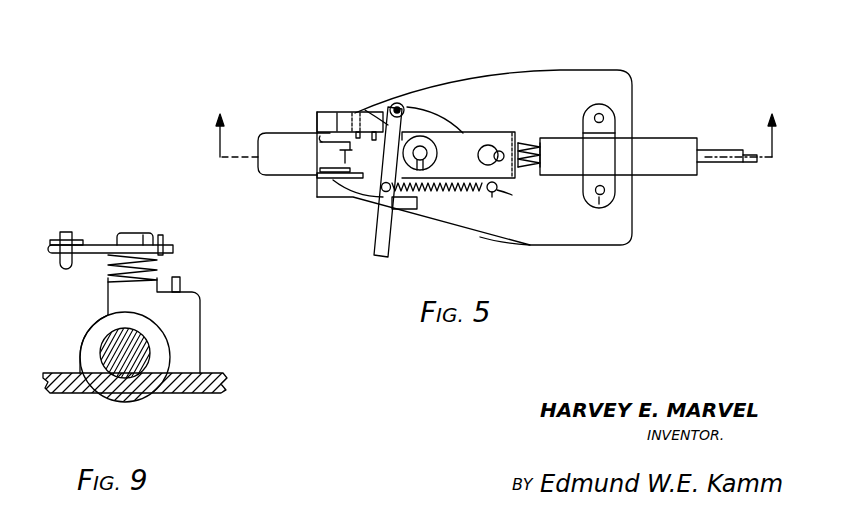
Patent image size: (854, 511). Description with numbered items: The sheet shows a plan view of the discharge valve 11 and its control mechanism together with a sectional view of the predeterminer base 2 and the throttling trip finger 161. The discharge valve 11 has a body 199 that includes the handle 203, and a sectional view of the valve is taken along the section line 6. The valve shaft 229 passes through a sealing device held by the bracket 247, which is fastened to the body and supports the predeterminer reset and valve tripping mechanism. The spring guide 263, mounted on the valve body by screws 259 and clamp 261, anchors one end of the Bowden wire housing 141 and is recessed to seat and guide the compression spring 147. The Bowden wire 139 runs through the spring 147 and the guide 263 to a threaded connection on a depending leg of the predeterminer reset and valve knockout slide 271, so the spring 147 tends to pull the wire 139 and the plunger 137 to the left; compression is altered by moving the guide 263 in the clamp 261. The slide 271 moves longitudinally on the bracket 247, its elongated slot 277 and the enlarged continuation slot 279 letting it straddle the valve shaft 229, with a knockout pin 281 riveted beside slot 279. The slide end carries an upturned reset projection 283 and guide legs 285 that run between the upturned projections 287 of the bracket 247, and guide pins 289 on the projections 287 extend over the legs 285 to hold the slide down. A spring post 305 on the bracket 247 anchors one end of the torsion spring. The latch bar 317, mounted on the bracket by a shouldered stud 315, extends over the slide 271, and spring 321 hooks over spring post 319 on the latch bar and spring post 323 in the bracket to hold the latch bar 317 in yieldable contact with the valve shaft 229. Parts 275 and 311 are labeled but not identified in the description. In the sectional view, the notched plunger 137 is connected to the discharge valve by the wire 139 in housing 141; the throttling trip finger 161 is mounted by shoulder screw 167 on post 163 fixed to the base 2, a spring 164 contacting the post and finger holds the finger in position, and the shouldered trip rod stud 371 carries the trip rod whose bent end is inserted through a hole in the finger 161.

In FIG. 9, the base 2 is at (192, 388).
In FIG. 5, the section line 6- 6 is at (742, 130).
In FIG. 5, the discharge valve 11 is at (252, 172).
In FIG. 9, the plunger 137 is at (140, 347).
In FIG. 5, the Bowden wire 139 is at (752, 163).
In FIG. 5, the Bowden wire housing 141 is at (718, 162).
In FIG. 5, the compression spring 147 is at (529, 168).
In FIG. 9, the throttling trip finger 161 is at (87, 245).
In FIG. 9, the post 163 is at (107, 285).
In FIG. 9, the spring 164 is at (155, 272).
In FIG. 9, the shoulder screw 167 is at (148, 233).
In FIG. 5, the valve body 199 is at (602, 80).
In FIG. 5, the handle 203 is at (270, 173).
In FIG. 5, the valve shaft 229 is at (428, 138).
In FIG. 5, the bracket 247 is at (430, 128).
In FIG. 5, the screws 259 is at (602, 198).
In FIG. 5, the clamp 261 is at (608, 196).
In FIG. 5, the spring guide 263 is at (650, 145).
In FIG. 5, the predeterminer reset and valve knockout slide 271 is at (517, 141).
In FIG. 5, the pin 275 is at (497, 191).
In FIG. 5, the elongated slot 277 is at (470, 150).
In FIG. 5, the slot 279 is at (335, 166).
In FIG. 5, the knockout pin 281 is at (417, 198).
In FIG. 5, the upturned reset projection 283 is at (345, 157).
In FIG. 5, the guide legs 285 is at (328, 137).
In FIG. 5, the upturned projections 287 is at (322, 134).
In FIG. 5, the guide pins 289 is at (357, 190).
In FIG. 5, the spring post 305 is at (383, 110).
In FIG. 5, the hub 311 is at (430, 143).
In FIG. 5, the shouldered stud 315 is at (396, 102).
In FIG. 5, the latch bar 317 is at (414, 115).
In FIG. 5, the spring post 319 is at (390, 233).
In FIG. 5, the spring 321 is at (480, 237).
In FIG. 5, the spring post 323 is at (500, 197).
In FIG. 9, the shouldered trip rod stud 371 is at (60, 262).